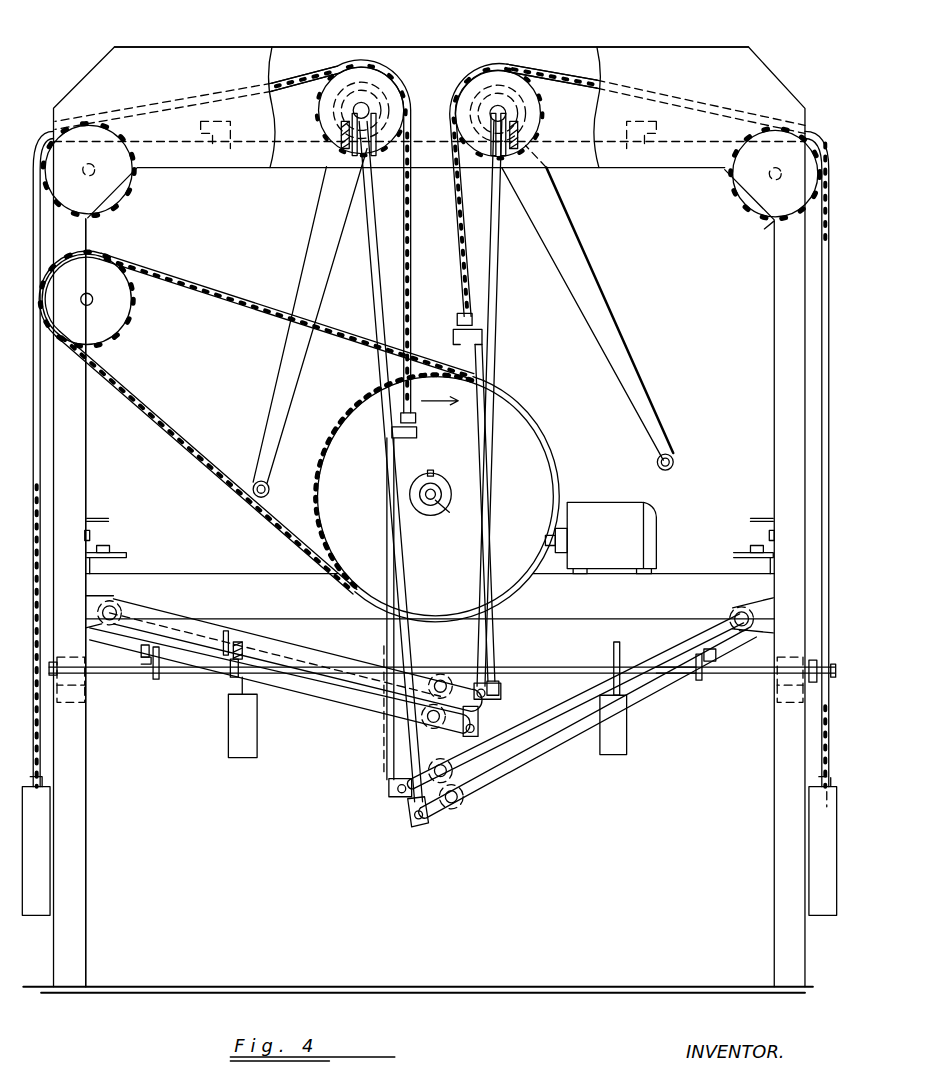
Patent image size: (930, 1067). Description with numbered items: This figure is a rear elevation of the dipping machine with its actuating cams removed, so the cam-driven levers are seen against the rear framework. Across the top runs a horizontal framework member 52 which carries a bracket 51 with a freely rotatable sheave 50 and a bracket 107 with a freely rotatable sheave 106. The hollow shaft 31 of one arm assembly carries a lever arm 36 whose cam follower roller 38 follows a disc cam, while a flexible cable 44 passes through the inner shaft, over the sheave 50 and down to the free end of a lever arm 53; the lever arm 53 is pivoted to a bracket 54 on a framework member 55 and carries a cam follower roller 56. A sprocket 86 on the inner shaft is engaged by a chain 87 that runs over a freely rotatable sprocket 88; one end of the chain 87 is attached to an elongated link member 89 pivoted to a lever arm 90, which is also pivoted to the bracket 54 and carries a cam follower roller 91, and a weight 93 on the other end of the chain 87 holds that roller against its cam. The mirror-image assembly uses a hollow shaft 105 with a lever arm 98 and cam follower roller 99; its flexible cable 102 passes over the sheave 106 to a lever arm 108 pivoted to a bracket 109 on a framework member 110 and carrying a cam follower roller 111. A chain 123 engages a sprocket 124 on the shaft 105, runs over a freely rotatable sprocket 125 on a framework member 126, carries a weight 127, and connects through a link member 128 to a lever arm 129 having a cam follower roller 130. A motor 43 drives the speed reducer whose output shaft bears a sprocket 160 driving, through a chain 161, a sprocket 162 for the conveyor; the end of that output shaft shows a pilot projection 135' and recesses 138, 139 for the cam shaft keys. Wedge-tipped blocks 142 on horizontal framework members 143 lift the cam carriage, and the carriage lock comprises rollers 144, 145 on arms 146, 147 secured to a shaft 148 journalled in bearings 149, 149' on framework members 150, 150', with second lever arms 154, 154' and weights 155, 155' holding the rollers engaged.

The horizontal framework member 52 is at (168, 46).
The chain 87 is at (292, 78).
The sprocket 86 is at (350, 82).
The hollow shaft 31 is at (375, 102).
The hollow shaft 105 is at (500, 96).
The sprocket 124 is at (526, 70).
The chain 123 is at (598, 58).
The sheave 50 is at (414, 106).
The bracket 51 is at (342, 130).
The sheave 106 is at (530, 118).
The bracket 107 is at (522, 135).
The sprocket 88 is at (126, 184).
The sprocket 125 is at (744, 203).
The framework member 126 is at (779, 225).
The lever arm 36 is at (313, 230).
The flexible cable 44 is at (372, 290).
The flexible cable 102 is at (508, 318).
The lever arm 98 is at (626, 342).
The cam follower roller 99 is at (680, 453).
The sprocket 162 is at (124, 316).
The chain 161 is at (146, 396).
The sprocket 160 is at (336, 408).
The recess 138 is at (434, 465).
The cam follower roller 38 is at (253, 474).
The framework member 110 is at (80, 472).
The link member 128 is at (494, 482).
The motor 43 is at (618, 497).
The wedge-tipped blocks 142 is at (108, 522).
The horizontal framework member 143 is at (120, 546).
The link member 89 is at (386, 520).
The recess 139 is at (431, 501).
The pilot projection 135' is at (446, 534).
The bracket 109 is at (114, 598).
The second lever arm 154' is at (237, 619).
The bracket 54 is at (742, 604).
The lever arm 129 is at (345, 656).
The cam follower roller 130 is at (445, 668).
The second lever arm 154 is at (639, 658).
The framework member 55 is at (768, 632).
The roller 144 is at (138, 649).
The bearing 149' is at (98, 689).
The arm 146 is at (160, 674).
The shaft 148 is at (210, 674).
The lever arm 108 is at (348, 692).
The cam follower roller 111 is at (382, 728).
The lever arm 90 is at (512, 714).
The arm 147 is at (692, 680).
The roller 145 is at (712, 678).
The bearing 149 is at (767, 676).
The framework member 150 is at (768, 709).
The framework member 150' is at (97, 720).
The weight 155' is at (216, 727).
The cam follower roller 91 is at (440, 758).
The weight 155 is at (607, 741).
The weight 93 is at (50, 832).
The lever arm 53 is at (478, 790).
The cam follower roller 56 is at (437, 806).
The weight 127 is at (814, 840).